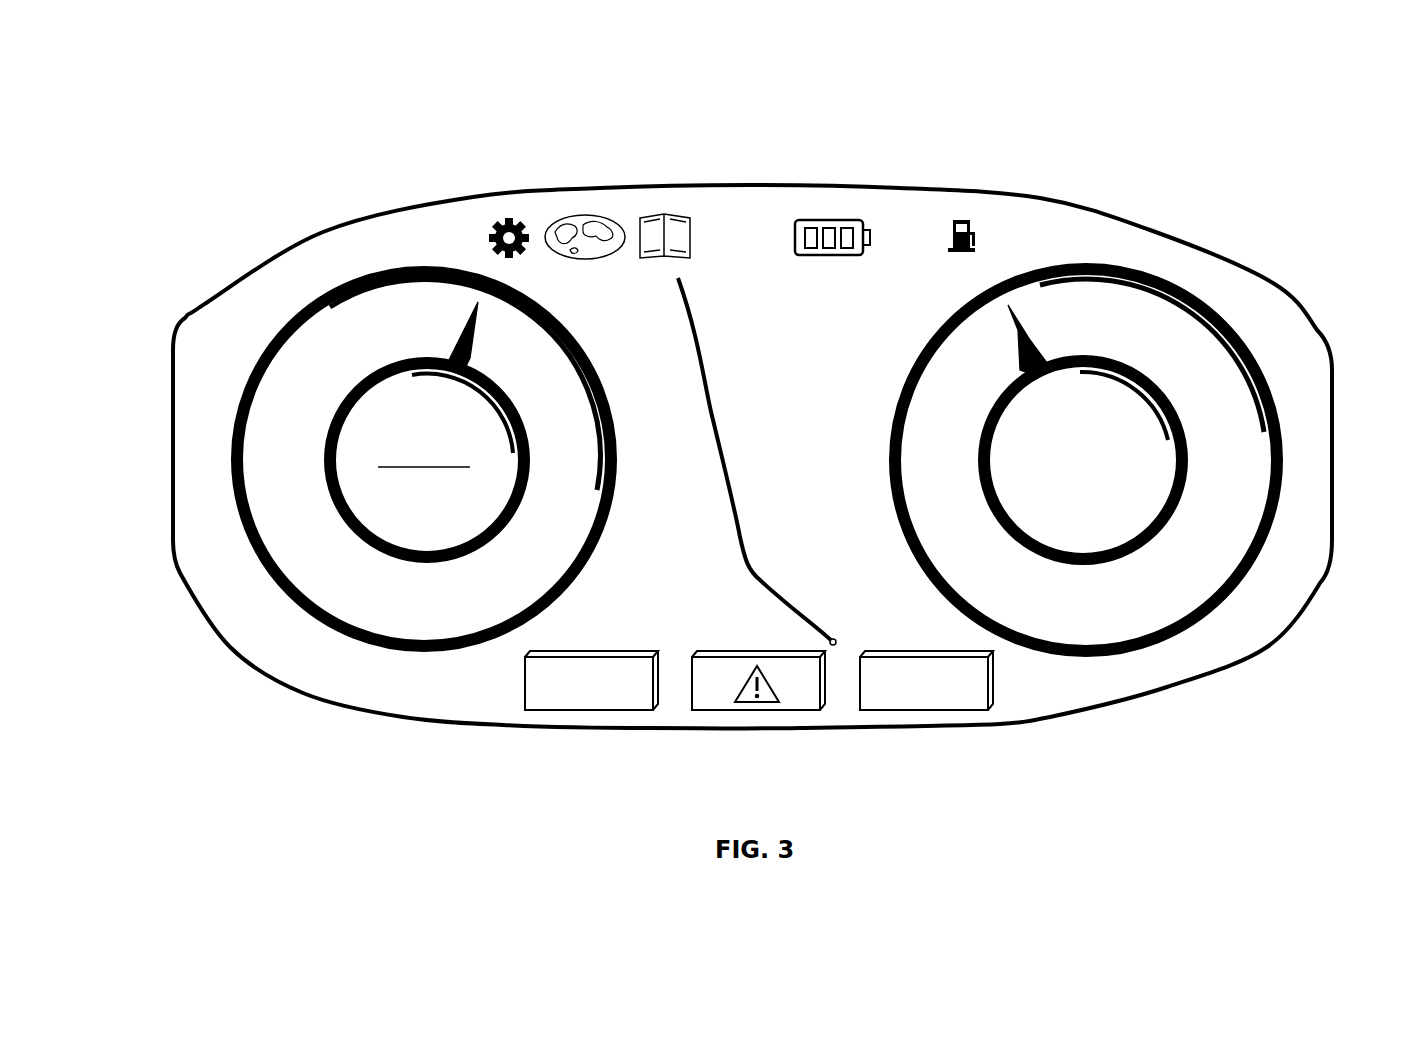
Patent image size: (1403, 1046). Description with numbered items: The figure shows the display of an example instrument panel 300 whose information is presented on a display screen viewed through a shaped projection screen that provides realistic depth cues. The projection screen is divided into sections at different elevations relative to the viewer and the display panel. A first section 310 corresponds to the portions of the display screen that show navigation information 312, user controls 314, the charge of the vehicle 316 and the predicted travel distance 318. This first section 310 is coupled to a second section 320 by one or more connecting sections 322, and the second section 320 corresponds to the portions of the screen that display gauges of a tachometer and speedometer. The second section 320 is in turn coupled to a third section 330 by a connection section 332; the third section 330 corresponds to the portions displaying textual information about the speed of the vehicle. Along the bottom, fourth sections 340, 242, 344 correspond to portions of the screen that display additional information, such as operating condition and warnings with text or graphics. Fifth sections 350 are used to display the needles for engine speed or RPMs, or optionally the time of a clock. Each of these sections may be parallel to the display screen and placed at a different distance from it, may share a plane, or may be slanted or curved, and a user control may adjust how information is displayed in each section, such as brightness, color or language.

The instrument panel 300 is at (340, 100).
The first section 310 is at (776, 200).
The navigation information 312 is at (777, 285).
The user controls 314 is at (700, 173).
The charge of vehicle 316 is at (884, 198).
The predicted travel distance 318 is at (985, 198).
The second section 320 is at (362, 313).
The connecting section 322 is at (423, 262).
The third section 330 is at (361, 433).
The connection section 332 is at (1103, 355).
The fourth section 340 is at (563, 712).
The warning indicator 242 is at (720, 712).
The fourth section 344 is at (925, 712).
The fifth section 350 is at (473, 305).